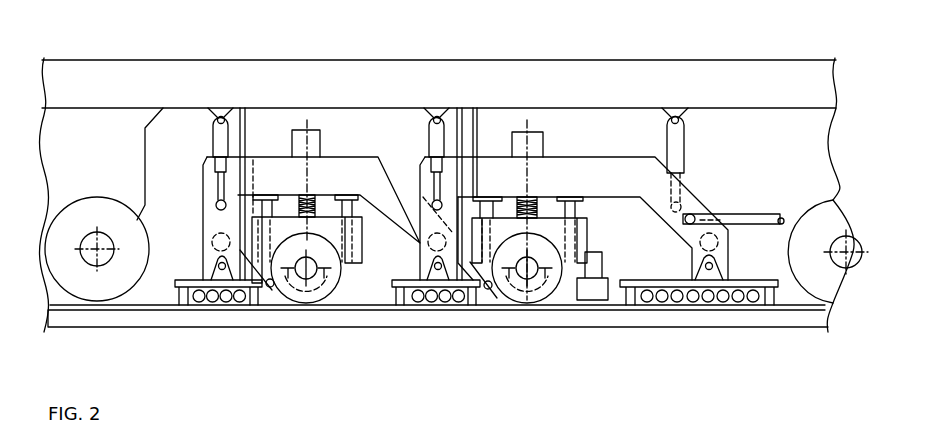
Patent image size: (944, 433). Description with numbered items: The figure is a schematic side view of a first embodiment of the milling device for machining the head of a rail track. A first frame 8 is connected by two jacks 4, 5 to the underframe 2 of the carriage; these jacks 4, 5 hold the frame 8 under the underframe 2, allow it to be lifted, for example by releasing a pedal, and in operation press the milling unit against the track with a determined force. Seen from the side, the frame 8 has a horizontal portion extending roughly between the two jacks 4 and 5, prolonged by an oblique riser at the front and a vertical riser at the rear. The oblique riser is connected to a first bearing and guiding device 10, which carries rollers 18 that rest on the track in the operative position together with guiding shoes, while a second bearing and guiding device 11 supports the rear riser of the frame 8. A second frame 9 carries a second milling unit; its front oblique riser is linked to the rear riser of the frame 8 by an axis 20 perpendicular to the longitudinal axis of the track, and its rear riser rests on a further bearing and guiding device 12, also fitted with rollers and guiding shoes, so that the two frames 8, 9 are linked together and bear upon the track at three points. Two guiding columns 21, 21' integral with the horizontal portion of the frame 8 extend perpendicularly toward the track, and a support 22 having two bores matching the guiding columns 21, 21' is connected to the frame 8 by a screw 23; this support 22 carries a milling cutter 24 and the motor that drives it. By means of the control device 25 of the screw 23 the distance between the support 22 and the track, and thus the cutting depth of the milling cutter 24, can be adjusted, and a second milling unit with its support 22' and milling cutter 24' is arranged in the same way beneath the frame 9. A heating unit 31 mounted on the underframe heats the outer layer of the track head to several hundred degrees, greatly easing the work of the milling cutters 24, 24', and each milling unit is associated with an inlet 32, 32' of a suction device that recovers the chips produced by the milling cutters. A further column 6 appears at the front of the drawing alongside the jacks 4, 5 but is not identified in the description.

The underframe 2 is at (397, 93).
The jack 4 is at (680, 152).
The jack 5 is at (437, 142).
The cylinder 6 is at (220, 143).
The first frame 8 is at (616, 178).
The second frame 9 is at (352, 172).
The first bearing and guiding device 10 is at (750, 283).
The second bearing and guiding device 11 is at (448, 300).
The bearing and guiding device 12 is at (233, 284).
The rollers 18 is at (712, 300).
The axis 20 is at (420, 242).
The guiding column 21 is at (596, 229).
The guiding column 21' is at (489, 192).
The support 22 is at (547, 210).
The support 22' is at (318, 242).
The screw 23 is at (534, 211).
The milling cutter 24 is at (527, 299).
The milling cutter 24' is at (306, 299).
The control device 25 is at (533, 144).
The heating unit 31 is at (593, 300).
The inlet 32 is at (493, 335).
The inlet 32' is at (285, 334).